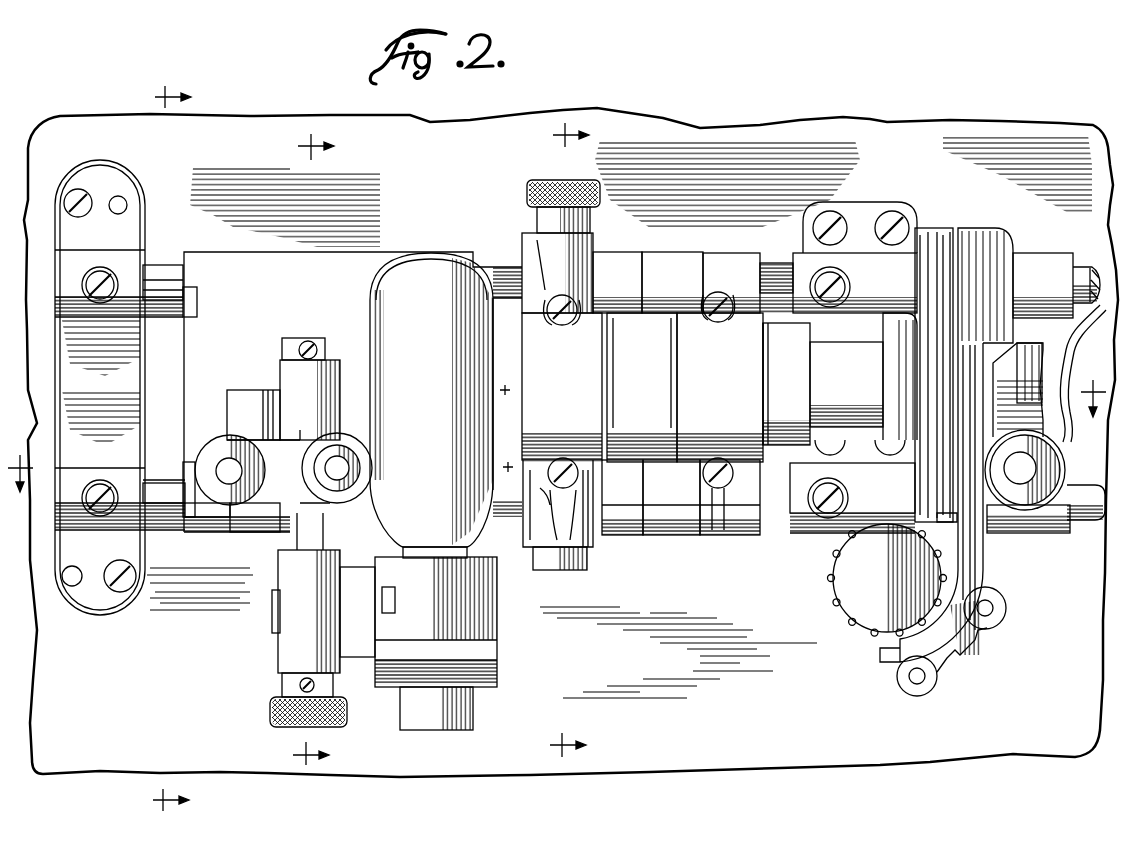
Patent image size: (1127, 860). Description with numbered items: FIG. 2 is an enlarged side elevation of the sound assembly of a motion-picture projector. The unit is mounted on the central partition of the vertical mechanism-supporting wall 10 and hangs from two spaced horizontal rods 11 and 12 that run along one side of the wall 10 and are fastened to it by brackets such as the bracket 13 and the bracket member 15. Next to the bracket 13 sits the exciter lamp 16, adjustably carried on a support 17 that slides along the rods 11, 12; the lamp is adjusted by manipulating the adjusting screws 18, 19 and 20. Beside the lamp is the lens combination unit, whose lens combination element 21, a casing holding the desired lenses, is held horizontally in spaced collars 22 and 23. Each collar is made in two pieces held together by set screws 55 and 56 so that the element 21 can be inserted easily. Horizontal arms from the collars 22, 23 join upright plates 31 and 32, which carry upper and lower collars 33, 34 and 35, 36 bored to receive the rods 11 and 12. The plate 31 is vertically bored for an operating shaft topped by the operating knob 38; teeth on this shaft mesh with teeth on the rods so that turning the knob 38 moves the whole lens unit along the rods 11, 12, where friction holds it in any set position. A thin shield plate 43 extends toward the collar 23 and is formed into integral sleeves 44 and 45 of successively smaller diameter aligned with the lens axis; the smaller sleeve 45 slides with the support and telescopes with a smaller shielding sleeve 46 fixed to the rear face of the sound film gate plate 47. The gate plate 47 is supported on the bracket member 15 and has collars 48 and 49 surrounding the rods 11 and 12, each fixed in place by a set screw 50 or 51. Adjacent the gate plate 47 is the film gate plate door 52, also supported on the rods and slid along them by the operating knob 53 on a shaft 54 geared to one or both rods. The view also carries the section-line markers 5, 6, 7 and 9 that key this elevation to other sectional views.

The section line 5 is at (555, 450).
The section line 6 is at (324, 450).
The section line 7 is at (581, 439).
The section line 9 is at (180, 449).
The vertical mechanism-supporting wall 10 is at (571, 442).
The rod 11 is at (163, 268).
The rod 12 is at (157, 492).
The bracket 13 is at (120, 387).
The bracket member 15 is at (860, 208).
The exciter lamp 16 is at (432, 265).
The support 17 is at (353, 392).
The adjusting screw 18 is at (213, 450).
The adjusting screw 19 is at (322, 475).
The adjusting screw 20 is at (270, 713).
The lens combination element 21 is at (642, 387).
The collar 22 is at (562, 441).
The collar 23 is at (720, 387).
The upright plate 31 is at (537, 265).
The upright plate 32 is at (722, 272).
The collar 33 is at (617, 282).
The collar 34 is at (620, 497).
The collar 35 is at (672, 282).
The collar 36 is at (671, 497).
The operating knob 38 is at (585, 181).
The shield plate 43 is at (767, 372).
The sleeve 44 is at (786, 384).
The sleeve 45 is at (846, 384).
The shielding sleeve 46 is at (898, 357).
The sound film gate plate 47 is at (923, 453).
The collar 48 is at (905, 260).
The collar 49 is at (868, 549).
The set screw 50 is at (850, 280).
The set screw 51 is at (828, 520).
The film gate plate door 52 is at (997, 248).
The operating knob 53 is at (1047, 476).
The shaft 54 is at (1025, 471).
The set screw 55 is at (715, 249).
The set screw 56 is at (575, 497).